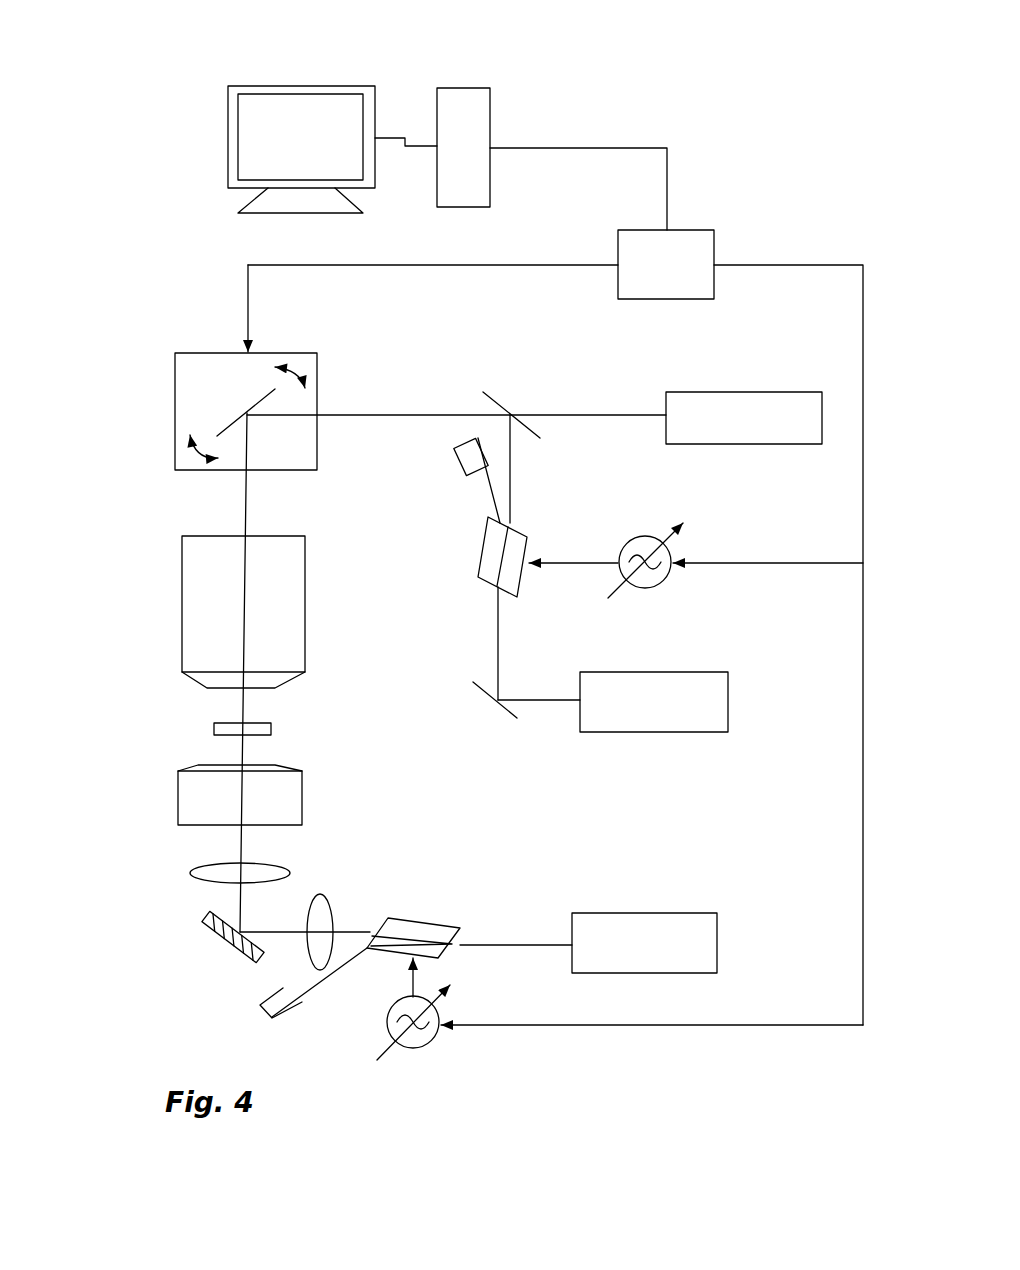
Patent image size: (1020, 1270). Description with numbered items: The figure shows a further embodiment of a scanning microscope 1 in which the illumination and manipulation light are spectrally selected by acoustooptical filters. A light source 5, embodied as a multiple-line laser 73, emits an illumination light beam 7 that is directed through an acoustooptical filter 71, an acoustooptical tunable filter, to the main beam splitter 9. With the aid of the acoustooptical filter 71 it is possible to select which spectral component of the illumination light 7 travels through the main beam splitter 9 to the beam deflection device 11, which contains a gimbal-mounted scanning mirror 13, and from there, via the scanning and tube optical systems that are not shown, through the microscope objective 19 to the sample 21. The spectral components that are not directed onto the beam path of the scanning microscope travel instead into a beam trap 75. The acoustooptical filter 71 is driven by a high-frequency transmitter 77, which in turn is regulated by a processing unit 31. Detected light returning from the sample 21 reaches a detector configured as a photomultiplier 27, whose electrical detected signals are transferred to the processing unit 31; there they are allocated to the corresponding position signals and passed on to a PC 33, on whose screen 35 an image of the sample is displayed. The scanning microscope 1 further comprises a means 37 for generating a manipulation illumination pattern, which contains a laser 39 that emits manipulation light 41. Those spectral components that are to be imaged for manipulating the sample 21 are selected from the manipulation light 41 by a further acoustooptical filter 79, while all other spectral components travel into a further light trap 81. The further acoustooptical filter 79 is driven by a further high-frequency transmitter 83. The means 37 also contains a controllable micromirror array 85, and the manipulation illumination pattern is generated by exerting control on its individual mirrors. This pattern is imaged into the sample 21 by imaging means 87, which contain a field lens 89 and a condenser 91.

The scanning microscope 1 is at (818, 222).
The light source 5 is at (730, 762).
The illumination light beam 7 is at (495, 638).
The main beam splitter 9 is at (500, 404).
The beam deflection device 11 is at (207, 378).
The scanning mirror 13 is at (228, 419).
The microscope objective 19 is at (202, 607).
The sample 21 is at (252, 726).
The photomultiplier 27 is at (685, 397).
The processing unit 31 is at (690, 243).
The PC 33 is at (475, 127).
The screen 35 is at (265, 128).
The means for generating a manipulation illumination pattern 37 is at (477, 837).
The laser 39 is at (703, 937).
The manipulation light 41 is at (533, 944).
The acoustooptical filter 71 is at (492, 552).
The multiple-line laser 73 is at (652, 687).
The beam trap 75 is at (460, 464).
The high-frequency transmitter 77 is at (630, 542).
The further acoustooptical filter 79 is at (405, 927).
The further light trap 81 is at (270, 1017).
The further high-frequency transmitter 83 is at (442, 1003).
The micromirror array 85 is at (208, 918).
The imaging means 87 is at (92, 806).
The field lens 89 is at (213, 873).
The condenser 91 is at (285, 805).